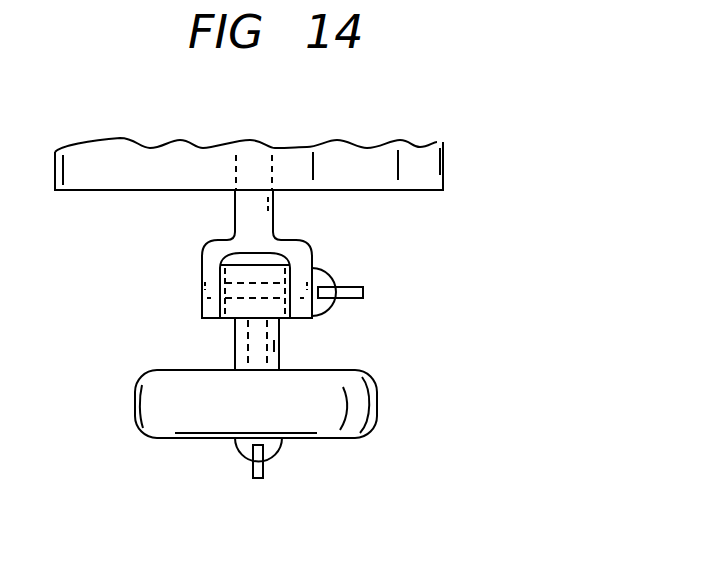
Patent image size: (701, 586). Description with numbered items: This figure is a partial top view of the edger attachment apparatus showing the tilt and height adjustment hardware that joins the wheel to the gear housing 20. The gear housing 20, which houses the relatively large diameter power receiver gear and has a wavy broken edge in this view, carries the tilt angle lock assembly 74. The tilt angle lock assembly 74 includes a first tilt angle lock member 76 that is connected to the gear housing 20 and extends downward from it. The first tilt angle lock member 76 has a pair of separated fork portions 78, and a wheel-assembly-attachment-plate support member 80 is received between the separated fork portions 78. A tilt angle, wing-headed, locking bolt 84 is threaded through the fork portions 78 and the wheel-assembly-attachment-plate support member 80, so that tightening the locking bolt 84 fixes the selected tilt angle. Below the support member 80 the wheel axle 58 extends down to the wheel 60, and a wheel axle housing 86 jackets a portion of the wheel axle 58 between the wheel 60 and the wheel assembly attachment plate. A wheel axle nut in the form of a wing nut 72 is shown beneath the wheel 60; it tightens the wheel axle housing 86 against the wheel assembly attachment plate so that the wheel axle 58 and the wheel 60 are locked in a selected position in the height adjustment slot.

The gear housing 20 is at (437, 163).
The first tilt angle lock member 76 is at (250, 213).
The tilt angle lock assembly 74 is at (326, 257).
The fork portions 78 is at (210, 285).
The wheel-assembly-attachment-plate support member 80 is at (247, 303).
The tilt angle wing-headed locking bolt 84 is at (407, 279).
The wheel axle 58 is at (272, 347).
The wheel axle housing 86 is at (235, 355).
The wheel 60 is at (360, 407).
The wing nut 72 is at (257, 470).